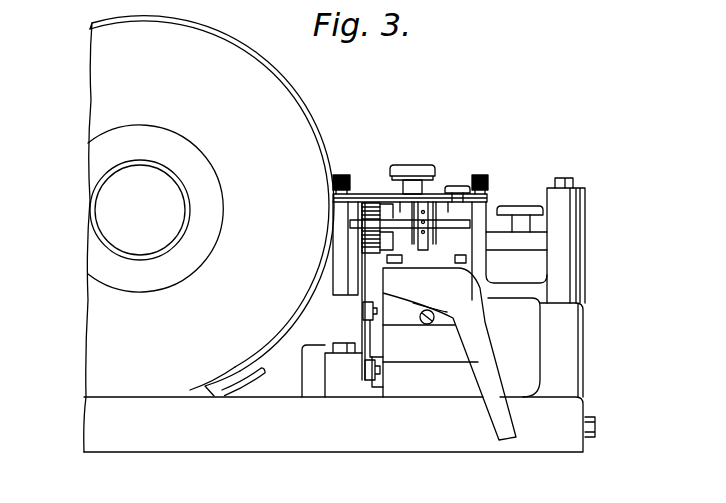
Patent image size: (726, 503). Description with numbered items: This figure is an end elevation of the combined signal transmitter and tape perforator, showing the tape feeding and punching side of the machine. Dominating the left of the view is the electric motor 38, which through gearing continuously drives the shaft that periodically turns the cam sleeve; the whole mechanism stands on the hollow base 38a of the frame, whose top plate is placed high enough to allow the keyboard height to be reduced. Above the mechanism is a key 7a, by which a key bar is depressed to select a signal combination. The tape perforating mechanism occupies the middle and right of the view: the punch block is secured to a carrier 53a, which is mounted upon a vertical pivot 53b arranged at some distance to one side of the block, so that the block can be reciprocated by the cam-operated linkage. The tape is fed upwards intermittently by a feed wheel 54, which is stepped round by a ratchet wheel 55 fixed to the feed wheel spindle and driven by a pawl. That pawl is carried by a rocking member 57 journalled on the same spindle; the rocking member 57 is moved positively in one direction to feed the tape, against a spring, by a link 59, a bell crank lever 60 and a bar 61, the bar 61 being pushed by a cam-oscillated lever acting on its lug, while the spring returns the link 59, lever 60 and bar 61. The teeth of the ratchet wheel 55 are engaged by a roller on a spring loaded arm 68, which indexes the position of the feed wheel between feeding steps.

The electric motor 38 is at (209, 234).
The hollow base 38a is at (339, 424).
The key 7a is at (418, 170).
The carrier 53a is at (502, 288).
The vertical pivot 53b is at (566, 178).
The rocking member 57 is at (333, 196).
The ratchet wheel 55 is at (350, 226).
The spring loaded arm 68 is at (362, 248).
The link 59 is at (362, 330).
The bar 61 is at (367, 315).
The bell crank lever 60 is at (370, 373).
The feed wheel 54 is at (426, 250).